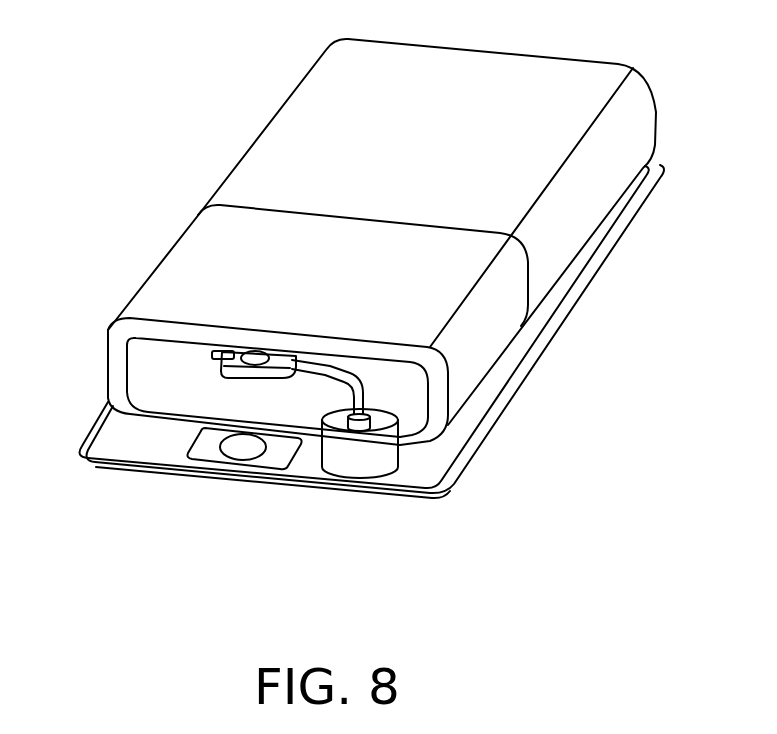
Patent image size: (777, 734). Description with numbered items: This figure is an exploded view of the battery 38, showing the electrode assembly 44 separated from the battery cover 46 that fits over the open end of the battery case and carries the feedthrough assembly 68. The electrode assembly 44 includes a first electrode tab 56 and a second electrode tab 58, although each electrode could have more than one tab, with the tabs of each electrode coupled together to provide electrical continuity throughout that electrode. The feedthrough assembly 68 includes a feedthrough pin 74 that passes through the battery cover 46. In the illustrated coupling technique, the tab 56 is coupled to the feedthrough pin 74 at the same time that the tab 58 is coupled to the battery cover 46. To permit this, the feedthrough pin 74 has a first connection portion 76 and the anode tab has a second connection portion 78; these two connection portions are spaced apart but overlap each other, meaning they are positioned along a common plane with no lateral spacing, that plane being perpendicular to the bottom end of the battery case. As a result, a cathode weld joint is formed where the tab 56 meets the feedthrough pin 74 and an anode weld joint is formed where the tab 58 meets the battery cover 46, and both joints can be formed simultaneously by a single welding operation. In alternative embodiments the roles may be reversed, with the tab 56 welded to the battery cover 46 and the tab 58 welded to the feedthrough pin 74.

The battery 38 is at (557, 545).
The electrode assembly 44 is at (633, 141).
The battery cover 46 is at (517, 347).
The first electrode tab 56 is at (271, 376).
The second electrode tab 58 is at (258, 465).
The feedthrough assembly 68 is at (388, 460).
The feedthrough pin 74 is at (335, 348).
The first connection portion 76 is at (280, 362).
The second connection portion 78 is at (223, 443).